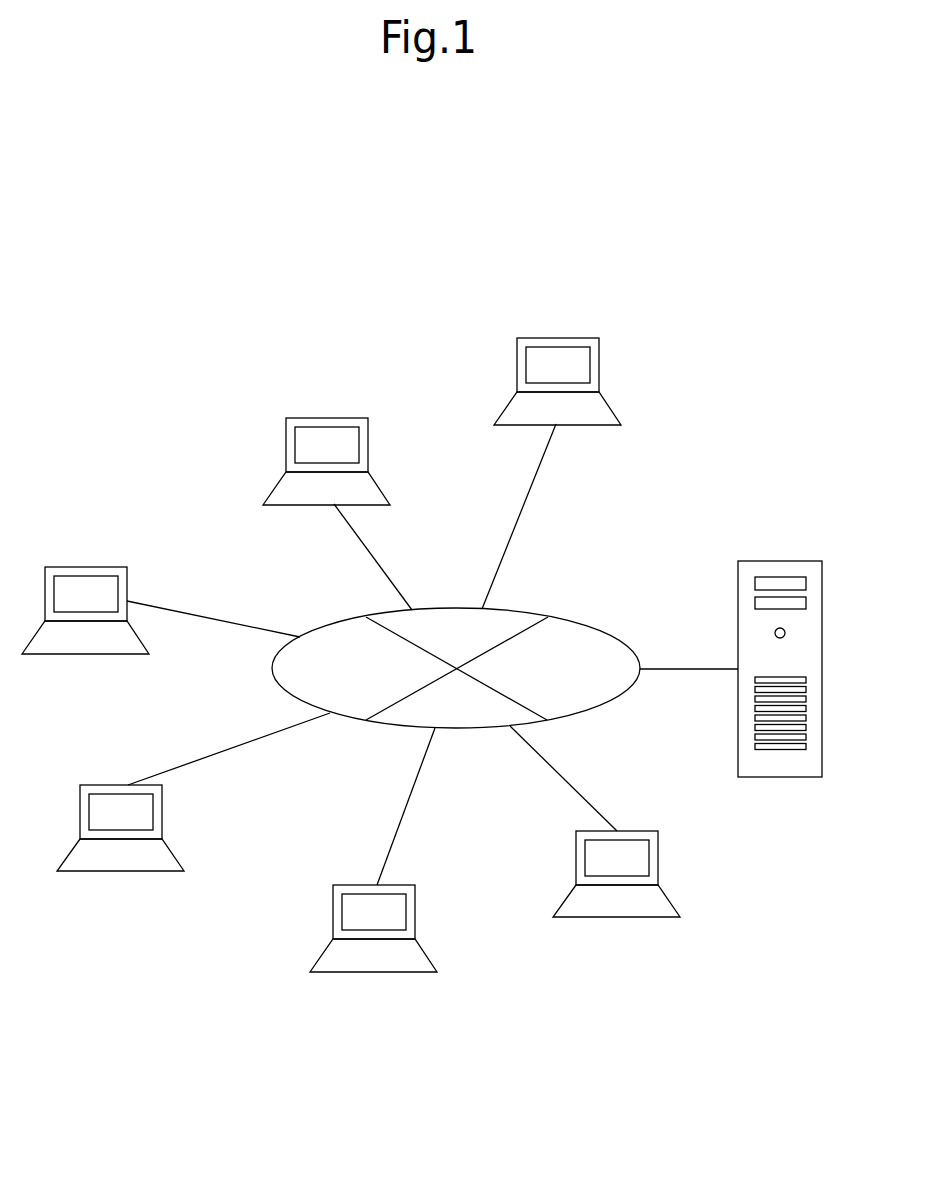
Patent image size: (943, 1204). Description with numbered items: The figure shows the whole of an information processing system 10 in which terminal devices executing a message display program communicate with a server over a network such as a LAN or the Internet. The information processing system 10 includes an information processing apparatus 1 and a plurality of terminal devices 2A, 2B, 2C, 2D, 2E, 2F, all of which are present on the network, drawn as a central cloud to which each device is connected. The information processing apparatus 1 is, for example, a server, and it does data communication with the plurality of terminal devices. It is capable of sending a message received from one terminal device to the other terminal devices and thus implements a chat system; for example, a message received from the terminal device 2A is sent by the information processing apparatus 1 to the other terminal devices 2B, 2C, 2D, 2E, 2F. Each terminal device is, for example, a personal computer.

The information processing system 10 is at (722, 381).
The information processing apparatus 1 is at (788, 561).
The terminal device 2A is at (555, 338).
The terminal device 2B is at (324, 418).
The terminal device 2C is at (85, 567).
The terminal device 2D is at (119, 872).
The terminal device 2E is at (367, 975).
The terminal device 2F is at (610, 920).